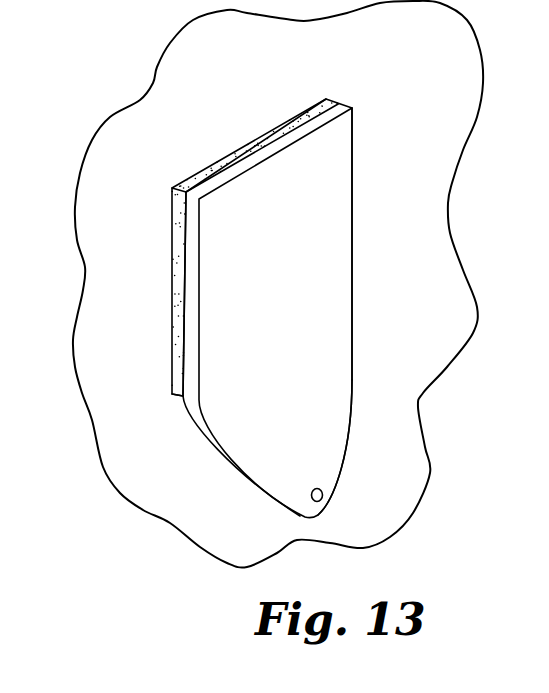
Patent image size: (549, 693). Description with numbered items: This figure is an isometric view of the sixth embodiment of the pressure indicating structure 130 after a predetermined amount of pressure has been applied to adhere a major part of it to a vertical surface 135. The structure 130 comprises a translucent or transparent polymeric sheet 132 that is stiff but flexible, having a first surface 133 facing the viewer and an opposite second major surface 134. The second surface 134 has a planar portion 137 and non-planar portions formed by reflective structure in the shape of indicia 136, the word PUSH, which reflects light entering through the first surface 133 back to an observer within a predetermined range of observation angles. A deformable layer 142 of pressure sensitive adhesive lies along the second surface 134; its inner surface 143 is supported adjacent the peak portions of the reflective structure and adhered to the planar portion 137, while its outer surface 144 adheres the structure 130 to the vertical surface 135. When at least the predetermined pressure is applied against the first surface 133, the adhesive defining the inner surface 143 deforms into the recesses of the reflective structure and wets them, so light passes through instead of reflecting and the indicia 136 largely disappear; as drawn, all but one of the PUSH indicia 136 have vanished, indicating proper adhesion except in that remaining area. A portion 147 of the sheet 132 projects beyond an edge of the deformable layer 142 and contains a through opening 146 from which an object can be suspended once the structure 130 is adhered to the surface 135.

The pressure indicating structure 130 is at (278, 289).
The polymeric sheet 132 is at (193, 260).
The first surface 133 is at (330, 342).
The second major surface 134 is at (183, 362).
The vertical surface 135 is at (210, 58).
The indicia 136 is at (305, 333).
The planar portion 137 is at (183, 310).
The deformable layer 142 is at (223, 160).
The inner surface 143 is at (302, 126).
The outer surface 144 is at (173, 223).
The through opening 146 is at (323, 502).
The projecting portion 147 is at (308, 433).